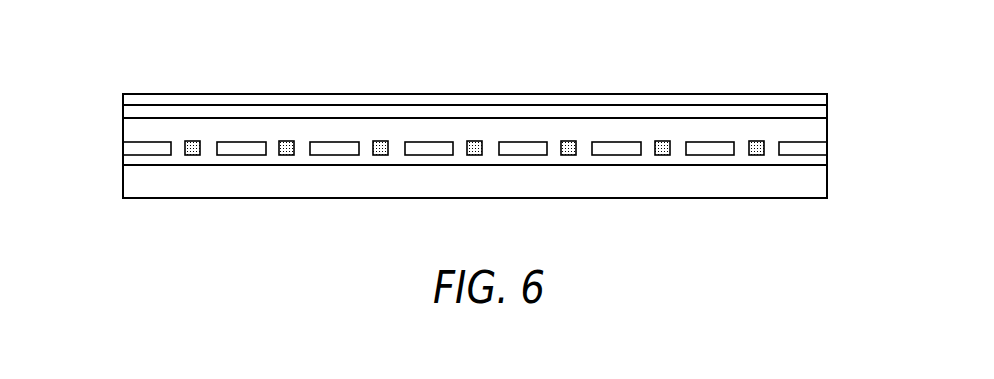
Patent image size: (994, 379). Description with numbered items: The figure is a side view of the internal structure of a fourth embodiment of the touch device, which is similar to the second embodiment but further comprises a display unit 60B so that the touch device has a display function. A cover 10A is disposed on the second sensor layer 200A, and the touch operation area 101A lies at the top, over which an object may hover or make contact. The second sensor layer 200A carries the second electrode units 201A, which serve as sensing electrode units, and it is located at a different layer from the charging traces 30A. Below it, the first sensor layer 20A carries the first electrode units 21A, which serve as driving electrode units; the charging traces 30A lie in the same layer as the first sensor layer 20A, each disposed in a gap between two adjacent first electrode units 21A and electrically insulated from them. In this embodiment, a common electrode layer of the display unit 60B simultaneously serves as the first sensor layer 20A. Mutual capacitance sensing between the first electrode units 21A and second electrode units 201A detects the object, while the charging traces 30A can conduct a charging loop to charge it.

The cover 10A is at (123, 100).
The touch operation area 101A is at (292, 93).
The second electrode units 201A is at (770, 112).
The second sensor layer 200A is at (828, 112).
The first sensor layer 20A is at (828, 150).
The first electrode units 21A is at (130, 147).
The charging traces 30A is at (192, 156).
The display unit 60B is at (136, 182).